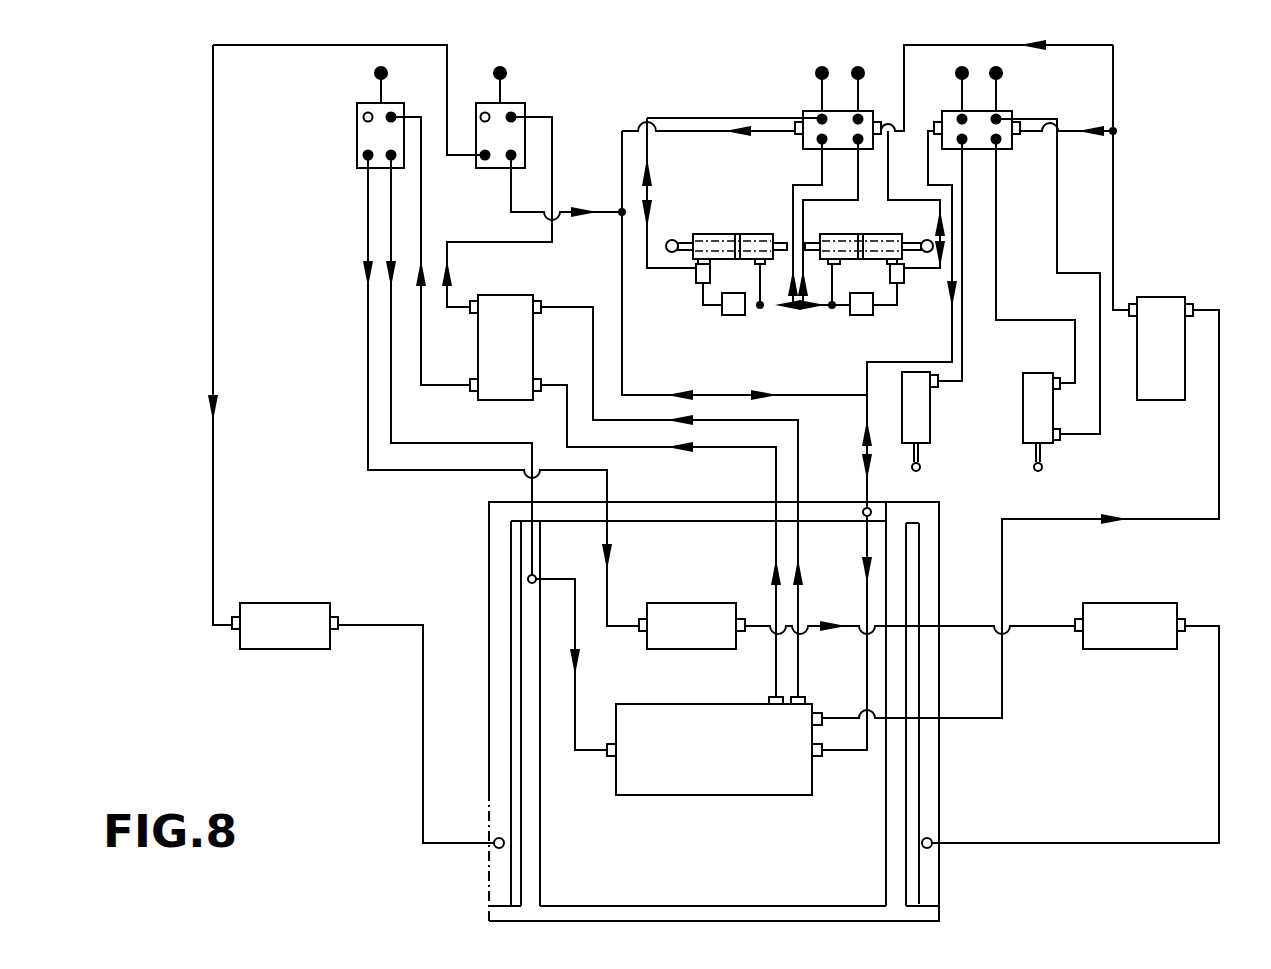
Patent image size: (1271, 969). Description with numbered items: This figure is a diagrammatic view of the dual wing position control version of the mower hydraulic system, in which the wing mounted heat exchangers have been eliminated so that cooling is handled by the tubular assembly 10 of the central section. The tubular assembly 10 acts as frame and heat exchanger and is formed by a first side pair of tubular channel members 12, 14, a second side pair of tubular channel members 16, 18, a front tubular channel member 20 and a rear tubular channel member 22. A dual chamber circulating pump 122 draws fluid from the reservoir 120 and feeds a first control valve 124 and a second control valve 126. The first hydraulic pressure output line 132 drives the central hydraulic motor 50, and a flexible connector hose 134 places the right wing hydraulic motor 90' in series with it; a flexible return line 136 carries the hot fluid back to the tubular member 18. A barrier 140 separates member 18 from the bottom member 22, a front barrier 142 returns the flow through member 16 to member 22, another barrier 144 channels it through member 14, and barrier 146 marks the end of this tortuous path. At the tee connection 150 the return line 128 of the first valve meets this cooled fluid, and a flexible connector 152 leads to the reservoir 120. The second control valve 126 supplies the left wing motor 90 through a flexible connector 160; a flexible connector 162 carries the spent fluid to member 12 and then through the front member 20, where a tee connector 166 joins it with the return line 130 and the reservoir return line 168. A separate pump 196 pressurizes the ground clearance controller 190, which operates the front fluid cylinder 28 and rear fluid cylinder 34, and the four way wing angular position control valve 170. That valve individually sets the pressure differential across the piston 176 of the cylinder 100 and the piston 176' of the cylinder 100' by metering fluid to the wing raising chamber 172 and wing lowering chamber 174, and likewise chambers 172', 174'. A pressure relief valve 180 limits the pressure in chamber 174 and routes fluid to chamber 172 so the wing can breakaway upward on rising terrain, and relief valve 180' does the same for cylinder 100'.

The tubular assembly 10 is at (955, 497).
The tubular channel member 12 is at (489, 669).
The tubular channel member 14 is at (511, 731).
The tubular channel member 16 is at (896, 873).
The tubular channel member 18 is at (927, 783).
The front tubular channel member 20 is at (641, 502).
The rear tubular channel member 22 is at (623, 906).
The fluid cylinder 28 is at (1028, 397).
The fluid cylinder 34 is at (922, 420).
The first hydraulic motor 50 is at (664, 602).
The left wing motor 90 is at (285, 647).
The right wing hydraulic motor 90' is at (1130, 648).
The hydraulic cylinder 100 is at (862, 254).
The hydraulic cylinder 100' is at (733, 248).
The reservoir 120 is at (650, 704).
The dual chamber circulating pump 122 is at (492, 295).
The first control valve 124 is at (357, 133).
The second control valve 126 is at (500, 170).
The return line 128 is at (391, 420).
The return line 130 is at (622, 350).
The first hydraulic pressure output line 132 is at (387, 472).
The flexible connector hose 134 is at (1036, 624).
The flexible return line 136 is at (1094, 840).
The barrier 140 is at (924, 904).
The front barrier 142 is at (870, 508).
The barrier 144 is at (503, 905).
The barrier 146 is at (533, 523).
The tee connection 150 is at (536, 576).
The flexible connector 152 is at (576, 692).
The flexible connector 160 is at (213, 345).
The flexible connector 162 is at (421, 665).
The tee connector 166 is at (865, 516).
The reservoir return line 168 is at (866, 644).
The wing angular position control valve 170 is at (815, 109).
The cylinder contracting or wing raising chamber 172 is at (913, 228).
The cylinder contracting chamber 172' is at (676, 222).
The cylinder extending or wing lowering chamber 174 is at (821, 227).
The cylinder extending chamber 174' is at (767, 221).
The cylinder piston 176 is at (854, 265).
The piston 176' is at (732, 265).
The pressure relief valve 180 is at (839, 326).
The pressure relief valve 180' is at (752, 326).
The ground clearance controller 190 is at (1005, 109).
The pump 196 is at (1153, 294).